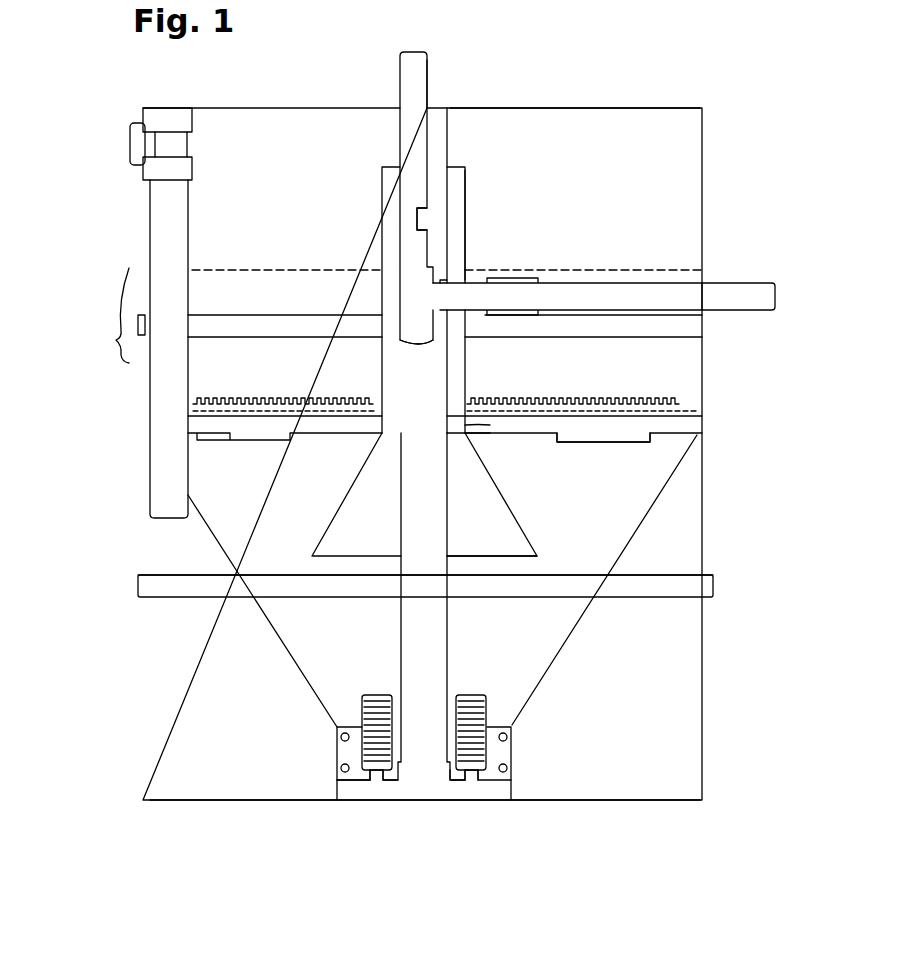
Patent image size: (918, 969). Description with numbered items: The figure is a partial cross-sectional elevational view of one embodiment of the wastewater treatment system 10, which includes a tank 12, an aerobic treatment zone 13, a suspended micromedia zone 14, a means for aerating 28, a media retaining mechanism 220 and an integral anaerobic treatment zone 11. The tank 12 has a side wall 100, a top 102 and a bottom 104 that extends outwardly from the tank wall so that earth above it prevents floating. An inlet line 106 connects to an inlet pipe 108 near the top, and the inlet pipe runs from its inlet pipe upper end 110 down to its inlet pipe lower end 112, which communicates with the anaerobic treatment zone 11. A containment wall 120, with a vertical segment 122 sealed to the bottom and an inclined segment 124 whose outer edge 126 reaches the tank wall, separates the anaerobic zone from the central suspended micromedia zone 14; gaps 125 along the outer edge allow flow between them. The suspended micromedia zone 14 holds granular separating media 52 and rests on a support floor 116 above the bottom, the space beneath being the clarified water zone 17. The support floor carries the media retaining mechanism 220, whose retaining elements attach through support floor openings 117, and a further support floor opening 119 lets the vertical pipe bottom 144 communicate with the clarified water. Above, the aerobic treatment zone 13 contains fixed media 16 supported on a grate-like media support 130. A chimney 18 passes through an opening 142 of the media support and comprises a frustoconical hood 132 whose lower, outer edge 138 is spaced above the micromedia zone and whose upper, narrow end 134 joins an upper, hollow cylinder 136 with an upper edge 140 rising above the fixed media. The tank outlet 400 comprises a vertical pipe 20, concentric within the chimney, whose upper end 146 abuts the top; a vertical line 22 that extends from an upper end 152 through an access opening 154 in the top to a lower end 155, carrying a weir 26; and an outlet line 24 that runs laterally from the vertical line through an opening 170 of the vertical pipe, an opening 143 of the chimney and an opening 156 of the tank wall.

The wastewater treatment system 10 is at (718, 78).
The anaerobic treatment zone 11 is at (175, 688).
The tank 12 is at (715, 183).
The aerobic treatment zone 13 is at (117, 335).
The suspended micromedia zone 14 is at (557, 627).
The fixed media 16 is at (212, 292).
The clarified water zone 17 is at (468, 782).
The chimney 18 is at (466, 176).
The vertical pipe 20 is at (320, 655).
The vertical line 22 is at (432, 245).
The outlet line 24 is at (735, 311).
The weir 26 is at (428, 218).
The means for aerating 28 is at (341, 768).
The granular separating media 52 is at (528, 667).
The side wall 100 is at (703, 133).
The top 102 is at (585, 108).
The bottom 104 is at (650, 802).
The inlet line 106 is at (130, 145).
The inlet pipe 108 is at (155, 172).
The inlet pipe upper end 110 is at (148, 117).
The inlet pipe lower end 112 is at (165, 520).
The support floor 116 is at (357, 781).
The support floor opening 117 is at (375, 781).
The support floor opening 119 is at (400, 770).
The containment wall 120 is at (660, 526).
The vertical segment 122 is at (337, 783).
The inclined segment 124 is at (660, 556).
The gaps 125 is at (237, 427).
The outer edge 126 is at (618, 442).
The media support 130 is at (283, 400).
The hood 132 is at (523, 527).
The upper, narrow end 134 is at (490, 433).
The upper, hollow cylinder 136 is at (382, 210).
The lower, outer edge 138 is at (530, 560).
The upper edge 140 is at (454, 167).
The opening 142 is at (466, 425).
The opening 143 is at (473, 278).
The vertical pipe bottom 144 is at (440, 775).
The upper end 146 is at (450, 112).
The upper end 152 is at (428, 52).
The access opening 154 is at (428, 106).
The lower end 155 is at (410, 348).
The opening 156 is at (703, 283).
The opening 170 is at (447, 282).
The media retaining mechanism 220 is at (488, 715).
The tank outlet 400 is at (372, 515).